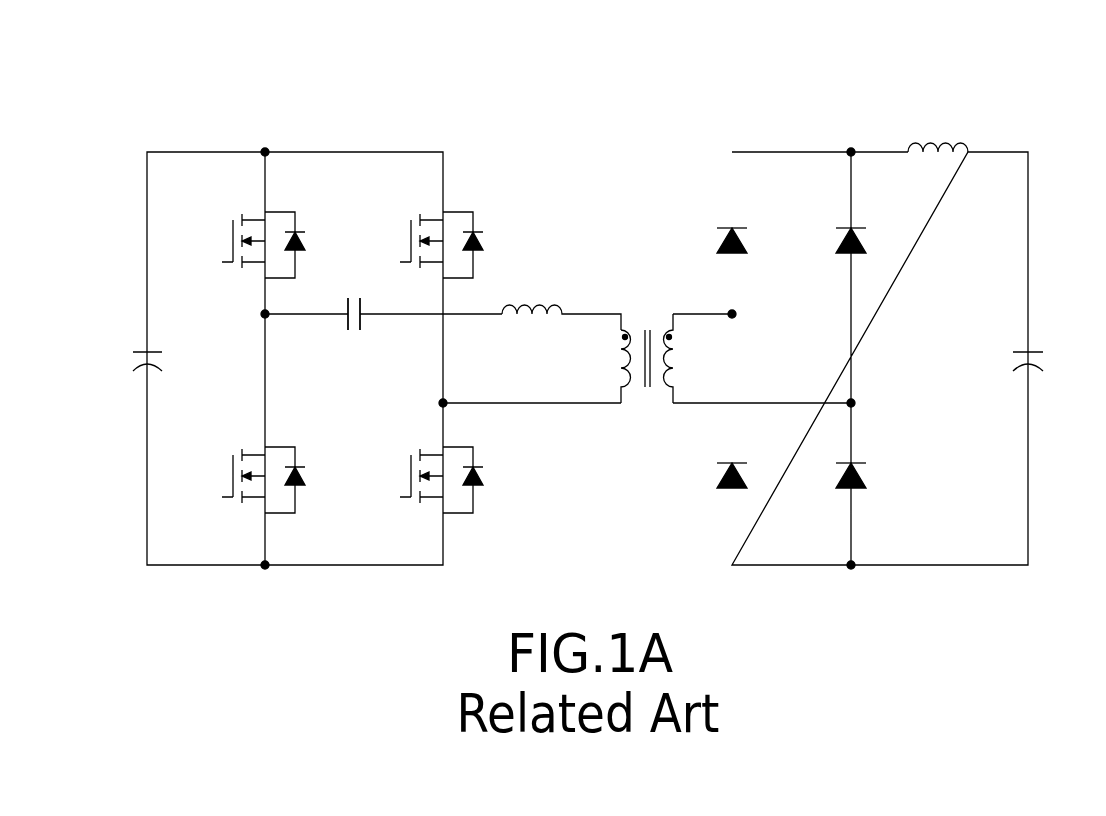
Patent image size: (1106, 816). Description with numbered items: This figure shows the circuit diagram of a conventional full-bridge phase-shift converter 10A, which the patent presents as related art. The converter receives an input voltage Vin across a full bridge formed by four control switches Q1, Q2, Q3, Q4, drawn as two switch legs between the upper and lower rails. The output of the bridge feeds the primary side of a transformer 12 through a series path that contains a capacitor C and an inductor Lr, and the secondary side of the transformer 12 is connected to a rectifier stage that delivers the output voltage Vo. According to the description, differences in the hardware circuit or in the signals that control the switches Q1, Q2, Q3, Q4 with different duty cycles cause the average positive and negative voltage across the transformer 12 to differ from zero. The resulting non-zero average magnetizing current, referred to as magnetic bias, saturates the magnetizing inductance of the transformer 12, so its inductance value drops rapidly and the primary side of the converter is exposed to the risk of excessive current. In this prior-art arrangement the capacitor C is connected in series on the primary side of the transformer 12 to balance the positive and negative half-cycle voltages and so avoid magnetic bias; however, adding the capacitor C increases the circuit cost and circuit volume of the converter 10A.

The related-art resonant converter circuit 10A is at (568, 62).
The transformer 12 is at (646, 300).
The control switch Q1 is at (263, 230).
The control switch Q2 is at (263, 467).
The control switch Q3 is at (441, 230).
The control switch Q4 is at (441, 467).
The capacitor C is at (354, 301).
The resonant inductor Lr is at (561, 306).
The input voltage source Vin is at (125, 357).
The output voltage Vo is at (1048, 357).